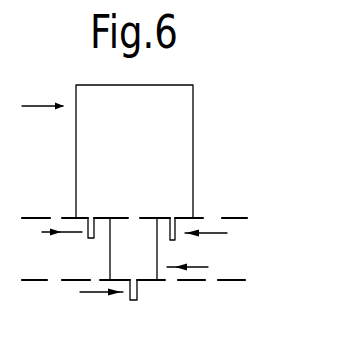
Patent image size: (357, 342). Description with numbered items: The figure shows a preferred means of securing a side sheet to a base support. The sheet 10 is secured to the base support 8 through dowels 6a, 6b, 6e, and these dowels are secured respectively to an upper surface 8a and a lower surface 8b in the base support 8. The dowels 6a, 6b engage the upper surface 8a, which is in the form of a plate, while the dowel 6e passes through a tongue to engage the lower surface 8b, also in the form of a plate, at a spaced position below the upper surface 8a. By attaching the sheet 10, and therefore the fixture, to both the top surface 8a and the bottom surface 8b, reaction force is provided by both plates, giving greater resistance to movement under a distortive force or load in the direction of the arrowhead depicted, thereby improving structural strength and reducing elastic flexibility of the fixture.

The sheet 10 is at (178, 129).
The base support 8 is at (208, 208).
The upper surface 8a is at (232, 213).
The lower surface 8b is at (238, 279).
The dowel 6a is at (90, 243).
The dowel 6b is at (178, 240).
The dowel 6e is at (137, 294).